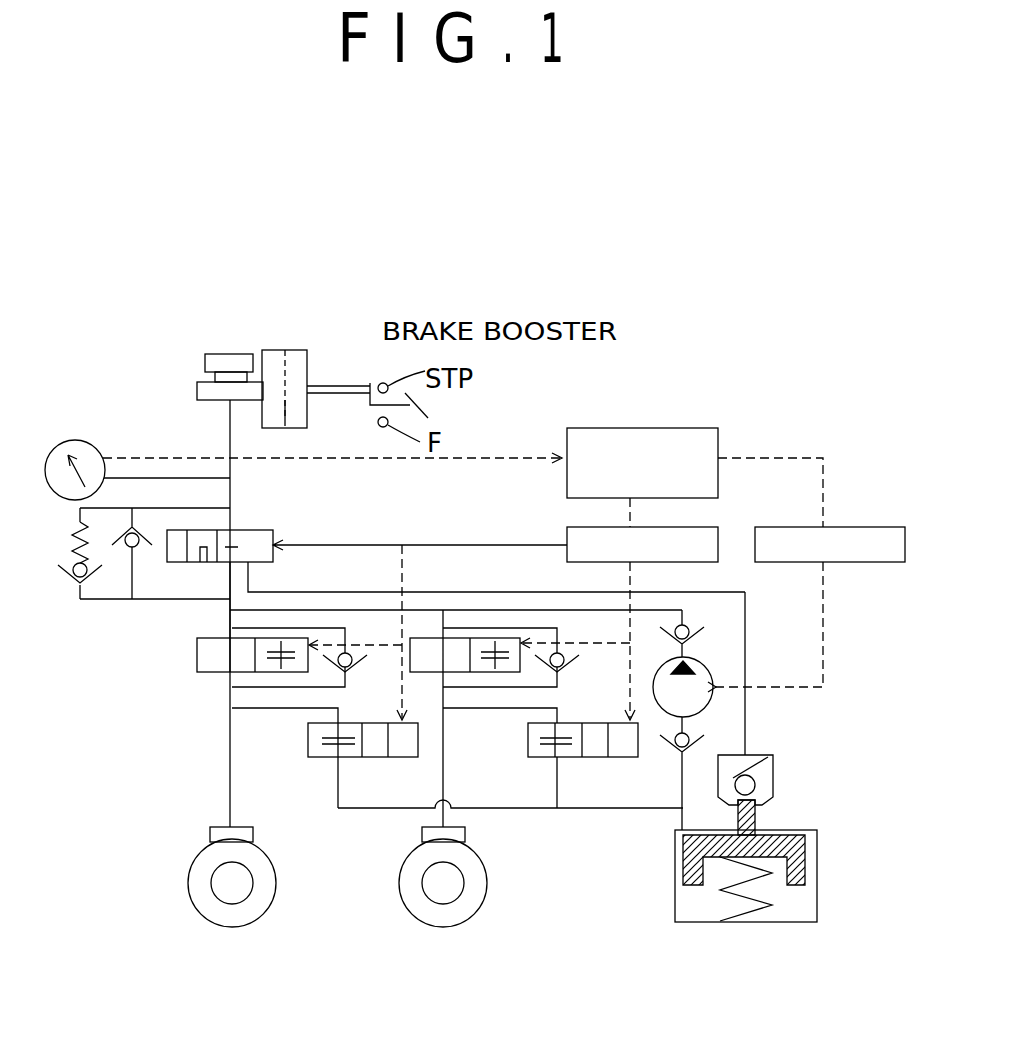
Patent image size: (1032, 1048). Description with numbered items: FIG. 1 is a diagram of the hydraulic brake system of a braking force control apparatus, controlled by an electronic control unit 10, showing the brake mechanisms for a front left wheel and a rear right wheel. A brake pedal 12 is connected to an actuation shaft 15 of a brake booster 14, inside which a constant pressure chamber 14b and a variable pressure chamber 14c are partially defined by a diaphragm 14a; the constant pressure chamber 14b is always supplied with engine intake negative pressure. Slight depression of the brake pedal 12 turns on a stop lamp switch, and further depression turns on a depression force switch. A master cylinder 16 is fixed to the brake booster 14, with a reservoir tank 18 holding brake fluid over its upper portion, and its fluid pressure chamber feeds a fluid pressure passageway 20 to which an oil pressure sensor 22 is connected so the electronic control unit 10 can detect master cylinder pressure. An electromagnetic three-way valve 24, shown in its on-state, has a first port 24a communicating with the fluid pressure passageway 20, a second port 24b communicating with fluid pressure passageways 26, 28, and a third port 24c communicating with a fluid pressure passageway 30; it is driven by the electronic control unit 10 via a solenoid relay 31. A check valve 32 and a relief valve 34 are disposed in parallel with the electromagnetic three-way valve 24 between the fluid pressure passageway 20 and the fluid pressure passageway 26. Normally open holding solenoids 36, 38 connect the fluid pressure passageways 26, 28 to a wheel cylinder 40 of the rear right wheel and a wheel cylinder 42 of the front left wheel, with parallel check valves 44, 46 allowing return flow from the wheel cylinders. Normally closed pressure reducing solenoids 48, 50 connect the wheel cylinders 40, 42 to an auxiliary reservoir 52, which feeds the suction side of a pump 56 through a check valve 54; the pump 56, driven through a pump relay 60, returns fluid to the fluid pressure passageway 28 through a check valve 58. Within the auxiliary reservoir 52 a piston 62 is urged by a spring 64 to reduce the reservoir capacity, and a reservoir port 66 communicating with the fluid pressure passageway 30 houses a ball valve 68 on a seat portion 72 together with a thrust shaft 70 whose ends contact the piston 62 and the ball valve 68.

The electronic control unit 10 is at (683, 427).
The brake pedal 12 is at (432, 407).
The brake booster 14 is at (307, 362).
The diaphragm 14a is at (288, 412).
The constant pressure chamber 14b is at (273, 350).
The variable pressure chamber 14c is at (294, 350).
The actuation shaft 15 is at (313, 396).
The master cylinder 16 is at (213, 403).
The reservoir tank 18 is at (205, 363).
The fluid pressure passageway 20 is at (230, 441).
The oil pressure sensor 22 is at (58, 492).
The electromagnetic three-way valve 24 is at (262, 530).
The first port 24a is at (232, 530).
The second port 24b is at (222, 562).
The third port 24c is at (247, 562).
The fluid pressure passageway 26 is at (230, 612).
The fluid pressure passageway 28 is at (342, 611).
The fluid pressure passageway 30 is at (377, 578).
The solenoid relay 31 is at (567, 533).
The check valve 32 is at (137, 547).
The relief valve 34 is at (63, 578).
The holding solenoid 36 is at (220, 674).
The holding solenoid 38 is at (428, 673).
The wheel cylinder 40 is at (253, 836).
The wheel cylinder 42 is at (465, 836).
The check valve 44 is at (352, 665).
The check valve 46 is at (563, 665).
The pressure reducing solenoid 48 is at (372, 757).
The pressure reducing solenoid 50 is at (590, 757).
The auxiliary reservoir 52 is at (829, 897).
The check valve 54 is at (673, 748).
The pump 56 is at (712, 703).
The check valve 58 is at (690, 627).
The pump relay 60 is at (877, 527).
The piston 62 is at (810, 832).
The spring 64 is at (757, 907).
The reservoir port 66 is at (773, 765).
The ball valve 68 is at (755, 788).
The thrust shaft 70 is at (737, 817).
The seat portion 72 is at (763, 755).